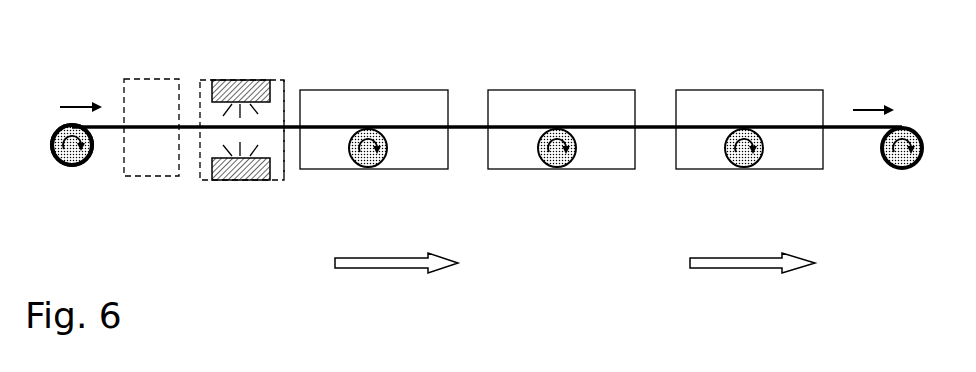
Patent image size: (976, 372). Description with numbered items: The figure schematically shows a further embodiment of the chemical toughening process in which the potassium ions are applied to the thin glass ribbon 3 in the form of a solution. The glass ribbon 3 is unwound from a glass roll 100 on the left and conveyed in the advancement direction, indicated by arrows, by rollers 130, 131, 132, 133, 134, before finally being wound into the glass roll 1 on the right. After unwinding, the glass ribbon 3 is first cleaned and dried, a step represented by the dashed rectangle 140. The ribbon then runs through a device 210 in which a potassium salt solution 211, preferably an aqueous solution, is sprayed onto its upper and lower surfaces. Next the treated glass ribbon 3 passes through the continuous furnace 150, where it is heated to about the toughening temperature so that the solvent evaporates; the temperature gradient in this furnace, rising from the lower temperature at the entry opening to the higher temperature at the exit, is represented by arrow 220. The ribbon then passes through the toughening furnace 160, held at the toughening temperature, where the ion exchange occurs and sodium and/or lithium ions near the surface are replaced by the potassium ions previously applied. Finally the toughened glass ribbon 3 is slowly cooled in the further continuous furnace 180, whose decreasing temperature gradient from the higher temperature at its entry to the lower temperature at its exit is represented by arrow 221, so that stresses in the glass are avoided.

The glass roll 1 is at (912, 128).
The glass ribbon 3 is at (292, 122).
The glass roll 100 is at (72, 166).
The roller 130 is at (80, 166).
The roller 131 is at (369, 168).
The roller 132 is at (569, 167).
The roller 133 is at (729, 168).
The roller 134 is at (894, 170).
The rectangle 140 is at (135, 86).
The continuous furnace 150 is at (340, 90).
The toughening furnace 160 is at (598, 88).
The continuous furnace 180 is at (720, 89).
The device 210 is at (256, 81).
The potassium salt solution 211 is at (240, 181).
The arrow 220 is at (373, 270).
The arrow 221 is at (732, 272).